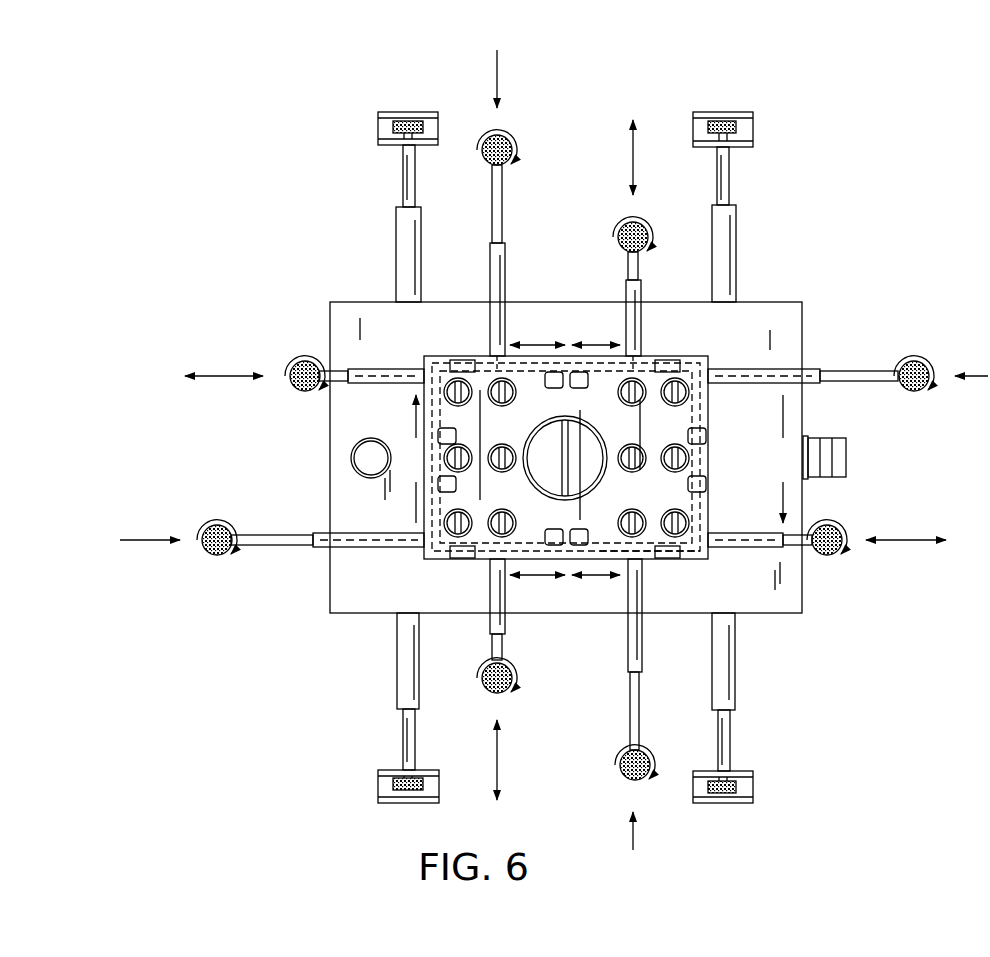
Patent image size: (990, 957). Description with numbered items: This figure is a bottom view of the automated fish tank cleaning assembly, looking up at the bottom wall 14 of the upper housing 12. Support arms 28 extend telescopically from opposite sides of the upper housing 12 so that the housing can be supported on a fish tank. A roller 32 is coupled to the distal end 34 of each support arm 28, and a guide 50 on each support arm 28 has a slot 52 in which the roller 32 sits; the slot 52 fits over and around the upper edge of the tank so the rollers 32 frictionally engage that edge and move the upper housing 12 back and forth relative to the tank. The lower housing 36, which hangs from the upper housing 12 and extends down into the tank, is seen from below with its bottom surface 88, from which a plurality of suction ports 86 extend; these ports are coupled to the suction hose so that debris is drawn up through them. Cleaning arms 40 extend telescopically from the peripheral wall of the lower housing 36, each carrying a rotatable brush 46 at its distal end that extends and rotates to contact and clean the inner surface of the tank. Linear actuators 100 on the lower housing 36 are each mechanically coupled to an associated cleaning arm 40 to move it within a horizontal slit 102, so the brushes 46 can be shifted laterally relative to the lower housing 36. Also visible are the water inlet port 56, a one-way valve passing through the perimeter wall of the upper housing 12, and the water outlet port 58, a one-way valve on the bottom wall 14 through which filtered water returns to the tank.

The upper housing 12 is at (803, 305).
The bottom wall 14 is at (455, 300).
The support arms 28 is at (736, 226).
The rollers 32 is at (708, 128).
The distal end 34 is at (727, 771).
The lower housing 36 is at (703, 356).
The cleaning arms 40 is at (848, 372).
The brushes 46 is at (915, 390).
The guides 50 is at (745, 112).
The slot 52 is at (748, 127).
The water inlet port 56 is at (838, 455).
The water outlet port 58 is at (365, 458).
The suction ports 86 is at (505, 455).
The bottom surface 88 is at (511, 506).
The linear actuators 100 is at (570, 547).
The horizontal slit 102 is at (605, 550).